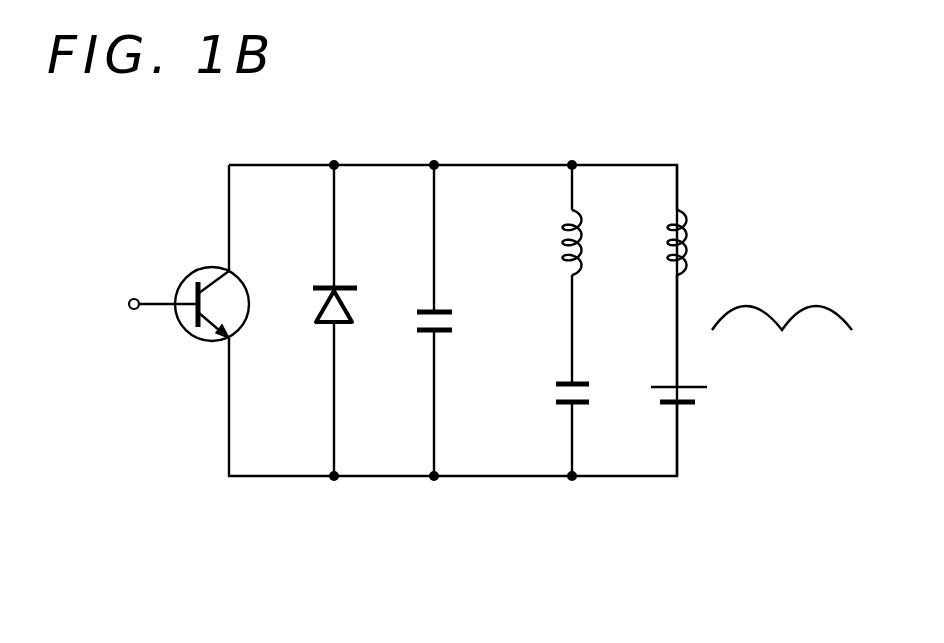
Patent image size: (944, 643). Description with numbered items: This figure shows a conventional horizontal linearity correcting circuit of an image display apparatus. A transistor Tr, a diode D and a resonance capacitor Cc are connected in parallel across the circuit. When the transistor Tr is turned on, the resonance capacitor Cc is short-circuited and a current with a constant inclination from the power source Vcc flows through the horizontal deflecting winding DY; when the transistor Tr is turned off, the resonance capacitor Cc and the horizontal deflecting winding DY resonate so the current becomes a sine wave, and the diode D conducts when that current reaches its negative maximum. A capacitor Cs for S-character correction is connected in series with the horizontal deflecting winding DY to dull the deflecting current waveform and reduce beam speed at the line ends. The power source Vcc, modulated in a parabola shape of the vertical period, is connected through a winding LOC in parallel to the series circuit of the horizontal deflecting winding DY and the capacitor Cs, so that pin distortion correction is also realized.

The transistor Tr is at (200, 268).
The diode D is at (345, 305).
The resonance capacitor Cc is at (455, 322).
The horizontal deflecting winding DY is at (586, 237).
The capacitor for S-character correction Cs is at (553, 393).
The winding LOC is at (689, 234).
The power source Vcc is at (703, 393).